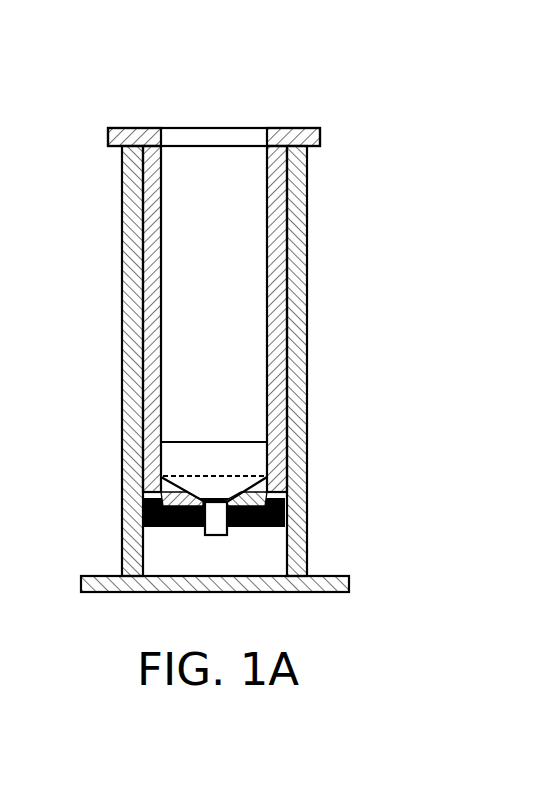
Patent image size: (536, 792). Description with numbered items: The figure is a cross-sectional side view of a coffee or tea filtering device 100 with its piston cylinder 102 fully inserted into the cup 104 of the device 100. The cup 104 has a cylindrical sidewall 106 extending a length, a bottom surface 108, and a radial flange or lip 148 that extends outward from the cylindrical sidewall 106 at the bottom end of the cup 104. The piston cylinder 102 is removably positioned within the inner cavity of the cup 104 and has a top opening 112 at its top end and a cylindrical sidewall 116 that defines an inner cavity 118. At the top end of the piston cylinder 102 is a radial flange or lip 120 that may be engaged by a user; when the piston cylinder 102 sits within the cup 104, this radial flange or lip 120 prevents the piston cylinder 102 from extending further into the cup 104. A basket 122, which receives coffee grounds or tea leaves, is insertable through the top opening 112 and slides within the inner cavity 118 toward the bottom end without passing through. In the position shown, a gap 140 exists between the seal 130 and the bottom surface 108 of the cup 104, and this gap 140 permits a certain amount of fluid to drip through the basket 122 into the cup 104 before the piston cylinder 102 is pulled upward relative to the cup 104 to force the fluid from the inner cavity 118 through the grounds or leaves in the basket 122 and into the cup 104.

The coffee or tea filtering device 100 is at (208, 83).
The piston cylinder 102 is at (163, 289).
The cup 104 is at (119, 304).
The cylindrical sidewall 106 is at (295, 248).
The bottom surface 108 is at (243, 582).
The top opening 112 is at (197, 117).
The cylindrical sidewall 116 is at (277, 395).
The inner cavity 118 is at (233, 344).
The radial flange or lip 120 is at (293, 130).
The basket 122 is at (200, 430).
The seal 130 is at (177, 541).
The gap 140 is at (233, 566).
The radial flange or lip 148 is at (328, 582).